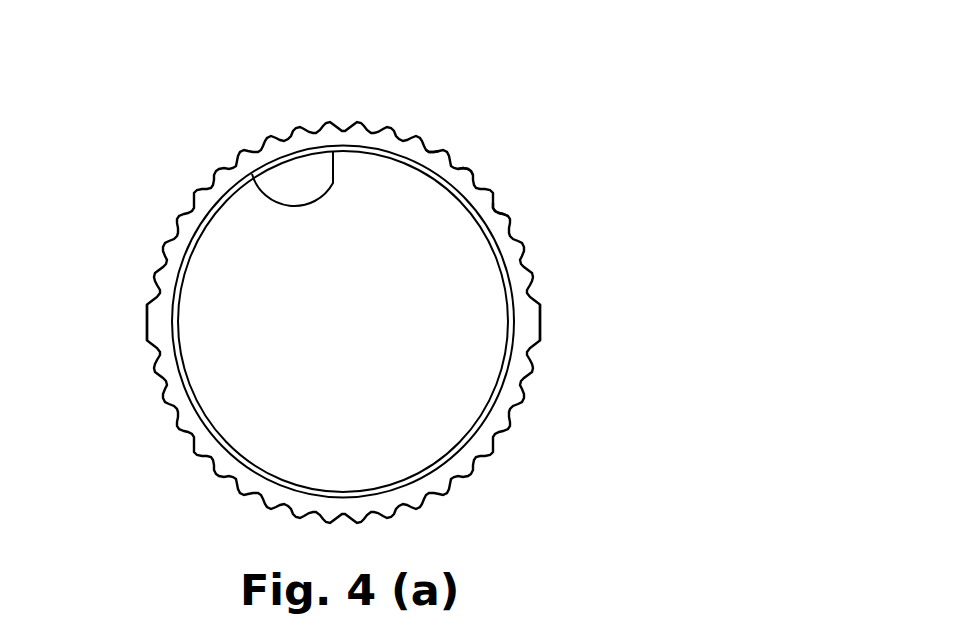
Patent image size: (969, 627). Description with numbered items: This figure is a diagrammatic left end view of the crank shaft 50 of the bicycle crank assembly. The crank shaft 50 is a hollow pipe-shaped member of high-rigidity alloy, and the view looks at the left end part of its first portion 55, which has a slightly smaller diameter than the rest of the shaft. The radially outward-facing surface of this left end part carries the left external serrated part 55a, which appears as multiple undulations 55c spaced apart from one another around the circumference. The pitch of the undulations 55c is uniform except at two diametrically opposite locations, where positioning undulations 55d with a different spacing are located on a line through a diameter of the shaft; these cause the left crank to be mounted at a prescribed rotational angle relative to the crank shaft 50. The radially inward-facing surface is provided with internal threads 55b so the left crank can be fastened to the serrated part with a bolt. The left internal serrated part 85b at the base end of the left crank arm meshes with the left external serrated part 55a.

The crank shaft 50 is at (343, 273).
The first portion 55 is at (415, 155).
The left external serrated part 55a is at (467, 170).
The internal threads 55b is at (253, 174).
The undulations 55c is at (500, 214).
The positioning undulations 55d is at (151, 323).
The left internal serrated part 85b is at (433, 156).